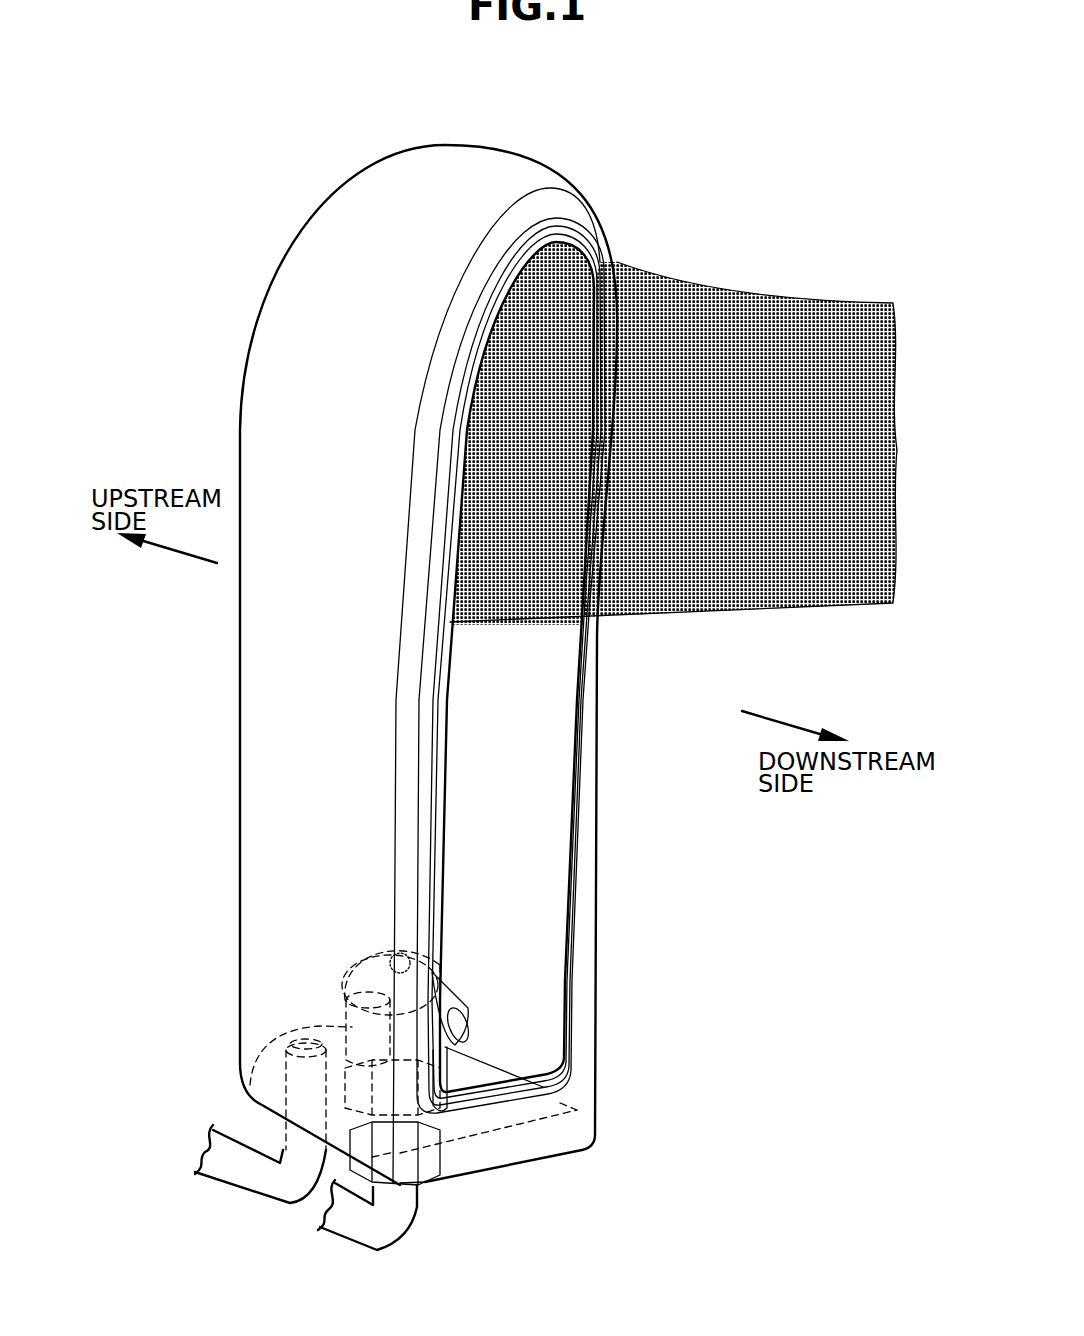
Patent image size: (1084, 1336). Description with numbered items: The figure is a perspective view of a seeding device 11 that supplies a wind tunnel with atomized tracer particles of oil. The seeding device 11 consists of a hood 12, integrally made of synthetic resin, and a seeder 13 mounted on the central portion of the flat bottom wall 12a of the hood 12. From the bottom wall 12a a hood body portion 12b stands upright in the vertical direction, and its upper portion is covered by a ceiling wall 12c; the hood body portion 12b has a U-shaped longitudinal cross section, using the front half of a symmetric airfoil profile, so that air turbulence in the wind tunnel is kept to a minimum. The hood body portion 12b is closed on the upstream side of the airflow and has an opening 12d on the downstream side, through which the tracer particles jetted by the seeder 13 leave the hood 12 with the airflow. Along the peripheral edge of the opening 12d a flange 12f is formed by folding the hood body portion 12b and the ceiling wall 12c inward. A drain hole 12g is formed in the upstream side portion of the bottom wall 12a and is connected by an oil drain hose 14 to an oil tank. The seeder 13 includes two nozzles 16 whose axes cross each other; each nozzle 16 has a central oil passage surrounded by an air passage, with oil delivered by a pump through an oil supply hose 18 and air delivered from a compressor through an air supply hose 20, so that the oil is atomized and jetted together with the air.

The seeding device 11 is at (507, 627).
The hood 12 is at (519, 627).
The bottom wall 12a is at (493, 1087).
The hood body portion 12b is at (268, 790).
The ceiling wall 12c is at (447, 168).
The opening 12d is at (447, 773).
The flange 12f is at (427, 702).
The drain hole 12g is at (305, 1045).
The seeder 13 is at (462, 942).
The oil drain hose 14 is at (235, 1178).
The nozzle 16 is at (431, 1019).
The oil supply hose 18 is at (410, 1230).
The air supply hose 20 is at (390, 1235).